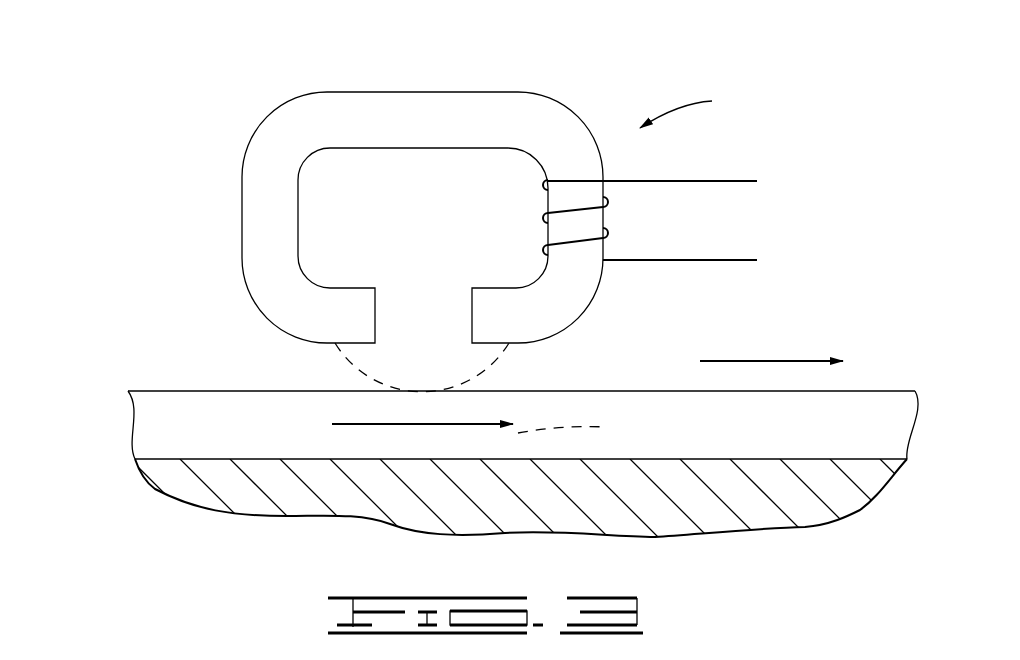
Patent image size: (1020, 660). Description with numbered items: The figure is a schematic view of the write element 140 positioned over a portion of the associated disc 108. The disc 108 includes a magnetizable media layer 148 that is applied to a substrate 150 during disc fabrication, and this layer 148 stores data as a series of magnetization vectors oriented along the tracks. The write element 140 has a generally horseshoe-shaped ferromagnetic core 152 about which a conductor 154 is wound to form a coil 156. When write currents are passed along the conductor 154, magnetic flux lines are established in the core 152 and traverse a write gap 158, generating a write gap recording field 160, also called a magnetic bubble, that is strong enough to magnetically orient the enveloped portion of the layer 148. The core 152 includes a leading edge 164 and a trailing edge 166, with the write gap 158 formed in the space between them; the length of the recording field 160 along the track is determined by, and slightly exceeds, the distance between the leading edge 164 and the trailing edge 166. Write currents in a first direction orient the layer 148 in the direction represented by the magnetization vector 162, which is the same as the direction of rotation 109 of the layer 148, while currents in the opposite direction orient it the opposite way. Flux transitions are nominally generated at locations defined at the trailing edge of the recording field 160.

The write element 140 is at (243, 95).
The ferromagnetic core 152 is at (403, 100).
The coil 156 is at (525, 215).
The write gap 158 is at (425, 297).
The conductor 154 is at (677, 259).
The disc 108 is at (152, 330).
The leading edge 164 is at (293, 310).
The trailing edge 166 is at (552, 308).
The direction of rotation 109 is at (744, 360).
The magnetizable media layer 148 is at (158, 425).
The substrate 150 is at (593, 530).
The write gap recording field 160 is at (491, 392).
The magnetization vector 162 is at (403, 423).